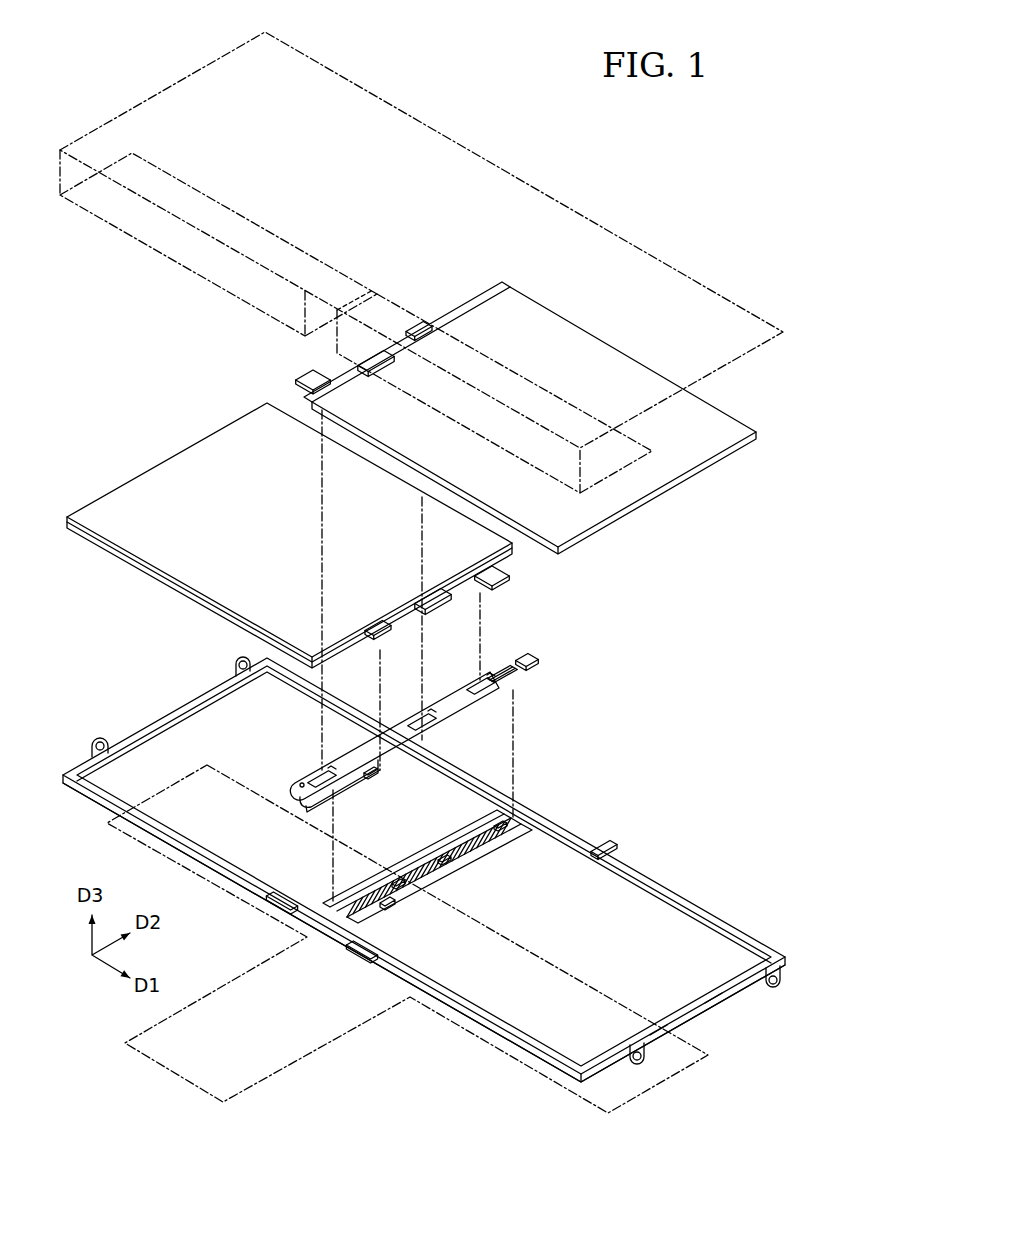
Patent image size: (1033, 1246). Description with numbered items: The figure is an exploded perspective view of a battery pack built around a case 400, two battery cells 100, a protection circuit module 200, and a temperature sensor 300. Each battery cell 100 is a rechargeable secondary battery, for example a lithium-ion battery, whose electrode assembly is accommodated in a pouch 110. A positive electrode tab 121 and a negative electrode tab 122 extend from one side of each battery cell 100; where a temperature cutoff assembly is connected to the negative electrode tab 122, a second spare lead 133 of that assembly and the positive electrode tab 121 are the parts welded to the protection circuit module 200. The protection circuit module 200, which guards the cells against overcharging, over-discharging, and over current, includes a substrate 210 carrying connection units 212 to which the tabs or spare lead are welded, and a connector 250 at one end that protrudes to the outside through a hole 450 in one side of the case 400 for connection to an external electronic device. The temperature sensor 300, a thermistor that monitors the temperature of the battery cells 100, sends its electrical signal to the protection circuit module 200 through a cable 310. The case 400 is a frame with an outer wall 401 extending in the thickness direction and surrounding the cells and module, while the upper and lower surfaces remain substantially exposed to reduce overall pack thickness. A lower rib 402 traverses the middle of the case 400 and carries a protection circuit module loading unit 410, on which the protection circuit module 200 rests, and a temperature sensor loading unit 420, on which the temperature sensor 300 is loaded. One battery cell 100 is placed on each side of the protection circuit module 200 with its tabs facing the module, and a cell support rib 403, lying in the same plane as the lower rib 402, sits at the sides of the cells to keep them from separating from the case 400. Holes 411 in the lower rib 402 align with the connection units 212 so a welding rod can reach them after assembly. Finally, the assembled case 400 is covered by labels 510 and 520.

The battery cell 100 is at (411, 475).
The pouch 110 is at (577, 348).
The positive electrode tab 121 is at (421, 323).
The negative electrode tab 122 is at (383, 358).
The second spare lead 133 is at (306, 375).
The protection circuit module 200 is at (460, 714).
The substrate 210 is at (451, 708).
The connection unit 212 is at (429, 711).
The connector 250 is at (529, 661).
The temperature sensor 300 is at (360, 789).
The cable 310 is at (349, 789).
The case 400 is at (424, 869).
The outer wall 401 is at (632, 872).
The lower rib 402 is at (410, 897).
The cell support rib 403 is at (316, 691).
The protection circuit module loading unit 410 is at (418, 875).
The hole 411 is at (455, 853).
The temperature sensor loading unit 420 is at (384, 899).
The hole 450 is at (518, 803).
The label 510 is at (482, 176).
The label 520 is at (313, 1052).